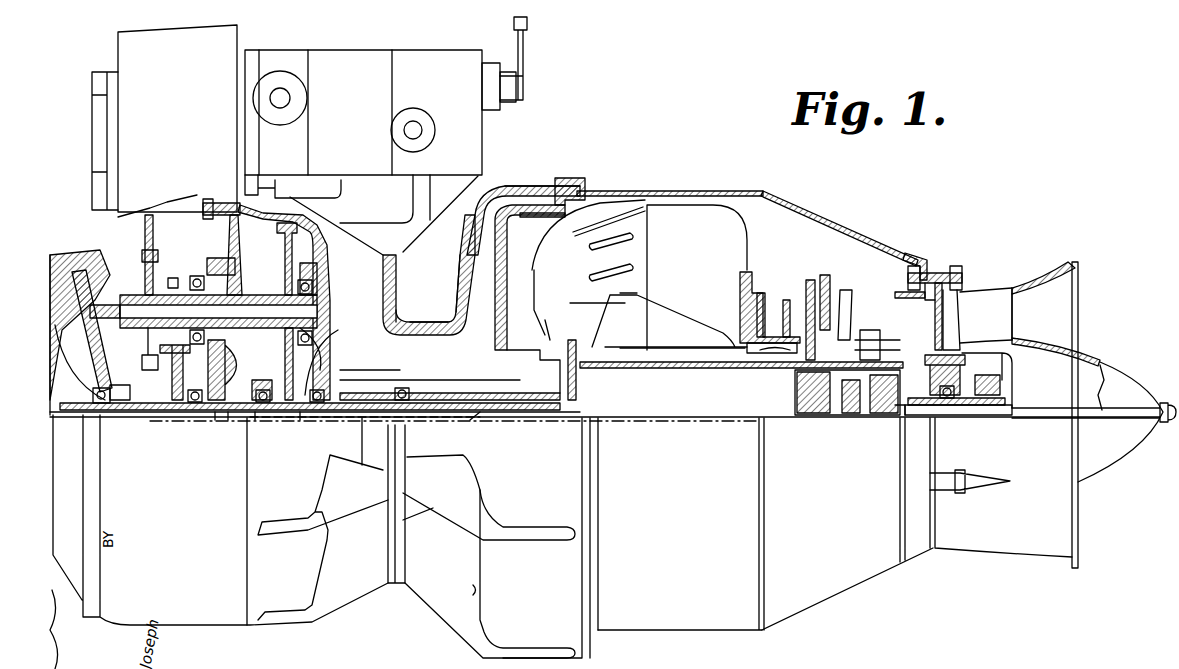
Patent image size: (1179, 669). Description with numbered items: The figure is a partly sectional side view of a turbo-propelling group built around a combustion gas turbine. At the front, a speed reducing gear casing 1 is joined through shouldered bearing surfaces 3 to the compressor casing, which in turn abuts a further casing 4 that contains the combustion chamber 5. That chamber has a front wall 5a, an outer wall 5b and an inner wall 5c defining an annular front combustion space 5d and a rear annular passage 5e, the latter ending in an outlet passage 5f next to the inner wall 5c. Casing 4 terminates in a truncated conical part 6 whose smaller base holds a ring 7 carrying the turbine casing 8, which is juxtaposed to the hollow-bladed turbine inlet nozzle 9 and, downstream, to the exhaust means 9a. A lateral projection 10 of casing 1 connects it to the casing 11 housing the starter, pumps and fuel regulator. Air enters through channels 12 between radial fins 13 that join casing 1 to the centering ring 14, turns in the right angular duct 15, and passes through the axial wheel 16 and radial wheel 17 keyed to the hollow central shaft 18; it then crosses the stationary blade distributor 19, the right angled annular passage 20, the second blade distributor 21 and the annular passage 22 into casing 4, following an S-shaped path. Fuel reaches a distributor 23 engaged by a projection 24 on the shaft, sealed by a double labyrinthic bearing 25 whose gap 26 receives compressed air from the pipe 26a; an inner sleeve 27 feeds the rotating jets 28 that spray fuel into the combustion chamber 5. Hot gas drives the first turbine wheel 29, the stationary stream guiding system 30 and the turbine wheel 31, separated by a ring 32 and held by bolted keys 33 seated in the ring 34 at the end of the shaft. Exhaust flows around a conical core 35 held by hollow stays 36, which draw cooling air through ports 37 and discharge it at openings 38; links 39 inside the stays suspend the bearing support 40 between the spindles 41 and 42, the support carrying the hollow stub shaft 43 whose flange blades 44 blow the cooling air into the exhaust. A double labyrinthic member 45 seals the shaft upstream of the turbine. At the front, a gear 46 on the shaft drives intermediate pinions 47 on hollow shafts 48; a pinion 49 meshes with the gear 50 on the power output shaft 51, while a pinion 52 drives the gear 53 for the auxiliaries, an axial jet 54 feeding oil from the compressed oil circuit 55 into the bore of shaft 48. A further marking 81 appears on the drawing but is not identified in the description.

The speed reducing gear casing 1 is at (215, 630).
The shouldered bearing surfaces 3 is at (398, 280).
The casing 4 is at (712, 191).
The combustion chamber 5 is at (722, 215).
The front wall 5a is at (536, 290).
The outer wall 5b is at (625, 222).
The inner wall 5c is at (655, 305).
The front combustion space 5d is at (605, 305).
The rear annular passage 5e is at (745, 233).
The outlet passage 5f is at (690, 330).
The truncated conical part 6 is at (852, 235).
The ring 7 is at (925, 262).
The turbine casing 8 is at (858, 300).
The turbine inlet nozzle 9 is at (770, 300).
The exhaust means 9a is at (1037, 292).
The lateral projection 10 is at (237, 33).
The auxiliaries casing 11 is at (355, 55).
The channels 12 is at (372, 254).
The fins 13 is at (352, 608).
The centering ring 14 is at (392, 585).
The right angular duct 15 is at (410, 320).
The axial wheel 16 is at (420, 333).
The radial wheel 17 is at (466, 300).
The hollow central shaft 18 is at (450, 412).
The stationary blade distributor 19 is at (490, 240).
The right angled annular passage 20 is at (488, 216).
The second blade distributor 21 is at (540, 183).
The annular passage 22 is at (588, 205).
The distributor 23 is at (220, 420).
The projection 24 is at (229, 420).
The double labyrinthic bearing 25 is at (256, 421).
The gap 26 is at (250, 390).
The pipe 26a is at (330, 445).
The inner sleeve 27 is at (482, 417).
The jets 28 is at (574, 340).
The first turbine wheel 29 is at (813, 290).
The stationary stream guiding system 30 is at (845, 290).
The turbine wheel 31 is at (884, 345).
The ring 32 is at (838, 416).
The bolted keys 33 is at (856, 416).
The ring 34 is at (795, 390).
The core 35 is at (1113, 372).
The hollow stays 36 is at (1020, 320).
The ports 37 is at (985, 485).
The inner openings 38 is at (976, 342).
The links 39 is at (948, 310).
The bearing support 40 is at (1010, 380).
The spindles 41 is at (945, 276).
The spindles 42 is at (1012, 360).
The stub shaft 43 is at (1010, 402).
The blades 44 is at (895, 416).
The double labyrinthic member 45 is at (515, 368).
The gear 46 is at (320, 420).
The intermediate pinions 47 is at (285, 362).
The hollow shaft 48 is at (262, 296).
The pinion 49 is at (178, 282).
The gear 50 is at (168, 372).
The shaft 51 is at (92, 398).
The pinion 52 is at (158, 268).
The gear 53 is at (150, 205).
The axial jet 54 is at (130, 295).
The compressed oil circuit 55 is at (90, 270).
The front arc wall 81 is at (538, 258).